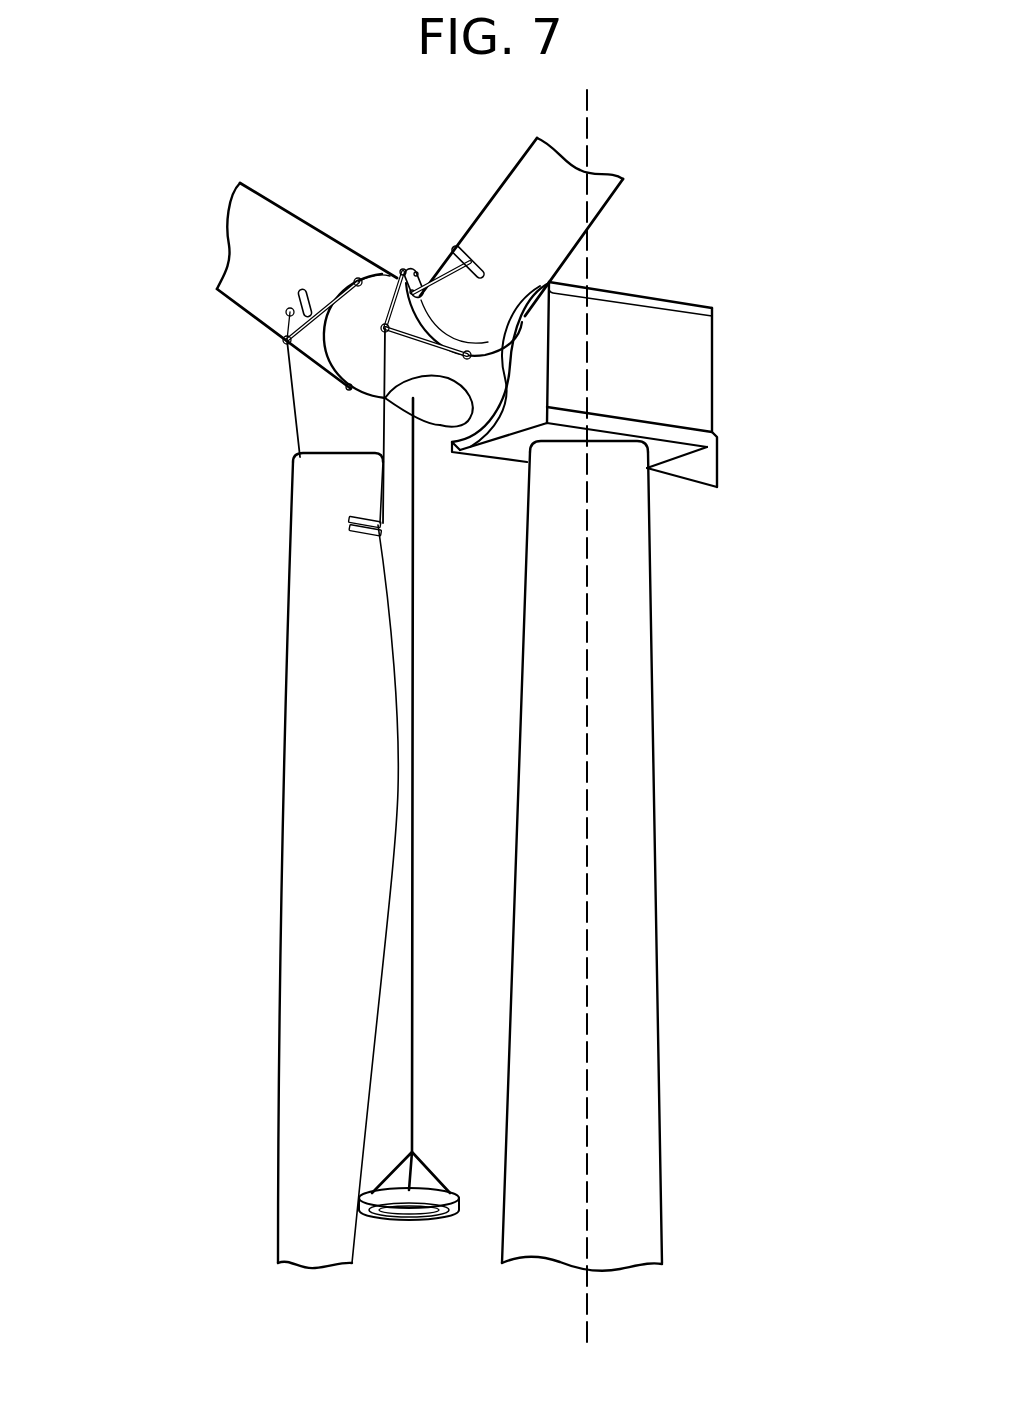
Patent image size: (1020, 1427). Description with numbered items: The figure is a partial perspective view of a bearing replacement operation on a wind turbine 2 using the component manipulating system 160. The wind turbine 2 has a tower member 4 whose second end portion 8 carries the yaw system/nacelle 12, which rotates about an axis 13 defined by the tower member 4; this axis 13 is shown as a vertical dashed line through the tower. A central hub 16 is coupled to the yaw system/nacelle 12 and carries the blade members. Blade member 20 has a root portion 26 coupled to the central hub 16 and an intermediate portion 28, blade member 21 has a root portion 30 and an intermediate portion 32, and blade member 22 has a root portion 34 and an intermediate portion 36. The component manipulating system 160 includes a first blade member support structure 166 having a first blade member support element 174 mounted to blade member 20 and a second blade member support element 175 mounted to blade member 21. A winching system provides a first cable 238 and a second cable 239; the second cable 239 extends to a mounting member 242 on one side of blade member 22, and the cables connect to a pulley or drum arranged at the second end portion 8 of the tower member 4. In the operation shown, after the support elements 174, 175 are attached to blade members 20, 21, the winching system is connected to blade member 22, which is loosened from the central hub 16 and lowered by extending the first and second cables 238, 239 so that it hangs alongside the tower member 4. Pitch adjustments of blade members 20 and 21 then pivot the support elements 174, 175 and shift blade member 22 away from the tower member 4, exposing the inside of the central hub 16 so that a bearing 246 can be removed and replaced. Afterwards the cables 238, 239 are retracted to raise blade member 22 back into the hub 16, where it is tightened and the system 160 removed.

The wind turbine 2 is at (446, 726).
The tower member 4 is at (664, 623).
The second end portion 8 is at (588, 462).
The yaw system/nacelle 12 is at (732, 344).
The axis 13 is at (592, 110).
The central hub 16 is at (477, 392).
The blade member 20 is at (251, 290).
The blade member 21 is at (568, 247).
The blade member 22 is at (277, 860).
The root portion 26 is at (375, 277).
The intermediate portion 28 is at (233, 220).
The root portion 30 is at (432, 270).
The intermediate portion 32 is at (603, 180).
The root portion 34 is at (301, 473).
The intermediate portion 36 is at (297, 832).
The component manipulating system 160 is at (394, 749).
The first blade member support structure 166 is at (275, 333).
The first blade member support element 174 is at (323, 300).
The second blade member support element 175 is at (463, 300).
The first cable 238 is at (296, 417).
The second cable 239 is at (385, 452).
The mounting member 242 is at (352, 536).
The bearing 246 is at (443, 1242).